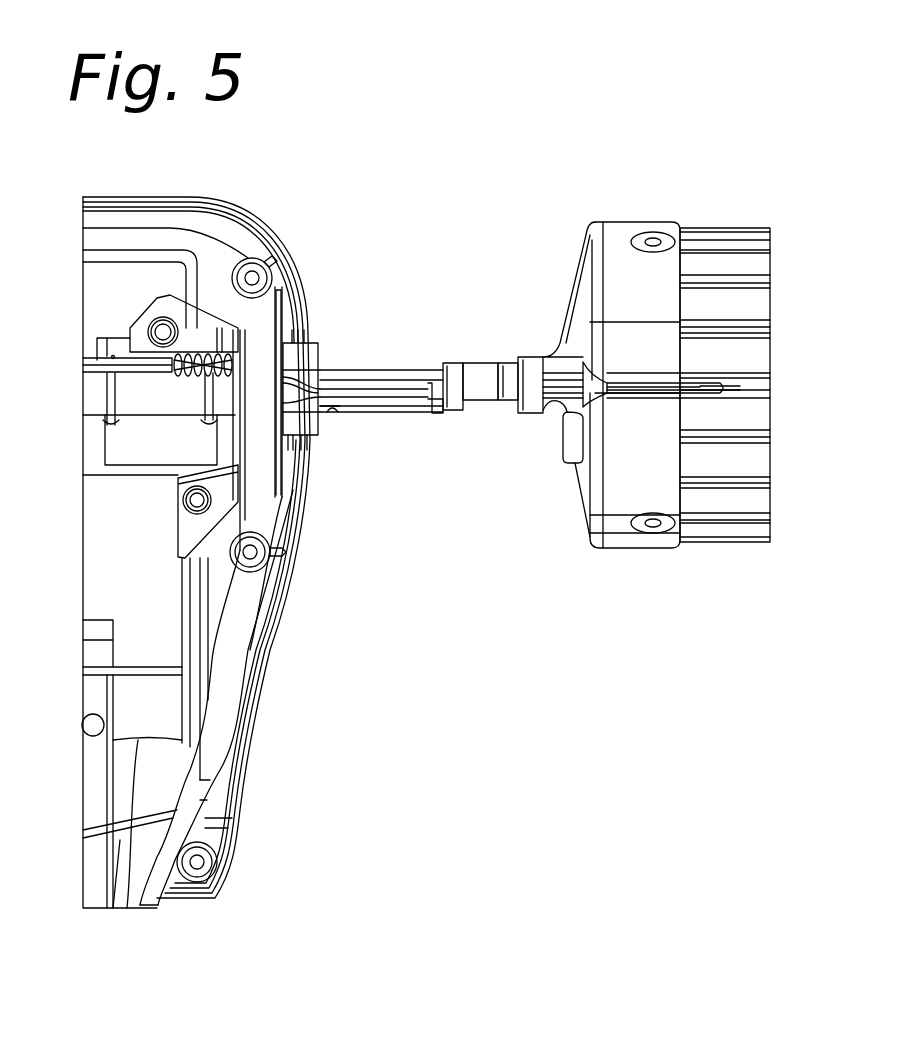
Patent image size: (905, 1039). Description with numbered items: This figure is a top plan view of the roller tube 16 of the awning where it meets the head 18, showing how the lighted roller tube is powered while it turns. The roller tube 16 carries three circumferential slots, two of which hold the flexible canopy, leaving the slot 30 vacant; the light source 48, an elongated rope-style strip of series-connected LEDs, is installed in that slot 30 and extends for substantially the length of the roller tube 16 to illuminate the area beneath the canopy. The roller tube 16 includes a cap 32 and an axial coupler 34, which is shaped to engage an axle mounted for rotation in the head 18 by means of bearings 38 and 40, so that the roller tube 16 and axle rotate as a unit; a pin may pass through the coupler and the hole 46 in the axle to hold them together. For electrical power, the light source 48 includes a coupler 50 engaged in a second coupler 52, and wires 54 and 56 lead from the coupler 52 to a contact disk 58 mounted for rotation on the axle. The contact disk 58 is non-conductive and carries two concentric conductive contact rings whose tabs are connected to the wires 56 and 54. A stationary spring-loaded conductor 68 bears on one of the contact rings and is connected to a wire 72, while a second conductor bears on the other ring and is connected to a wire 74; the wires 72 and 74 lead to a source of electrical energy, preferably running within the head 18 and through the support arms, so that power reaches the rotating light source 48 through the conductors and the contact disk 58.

The roller tube 16 is at (736, 230).
The head 18 is at (230, 205).
The slot 30 is at (710, 160).
The cap 32 is at (403, 415).
The axial coupler 34 is at (527, 353).
The bearing 38 is at (110, 430).
The bearing 40 is at (210, 430).
The hole 46 is at (332, 413).
The light source 48 is at (737, 383).
The coupler 50 is at (513, 378).
The second coupler 52 is at (482, 373).
The wire 54 is at (302, 412).
The wire 56 is at (306, 374).
The contact disk 58 is at (279, 312).
The spring-loaded conductor 68 is at (284, 356).
The wire 72 is at (103, 370).
The wire 74 is at (127, 357).